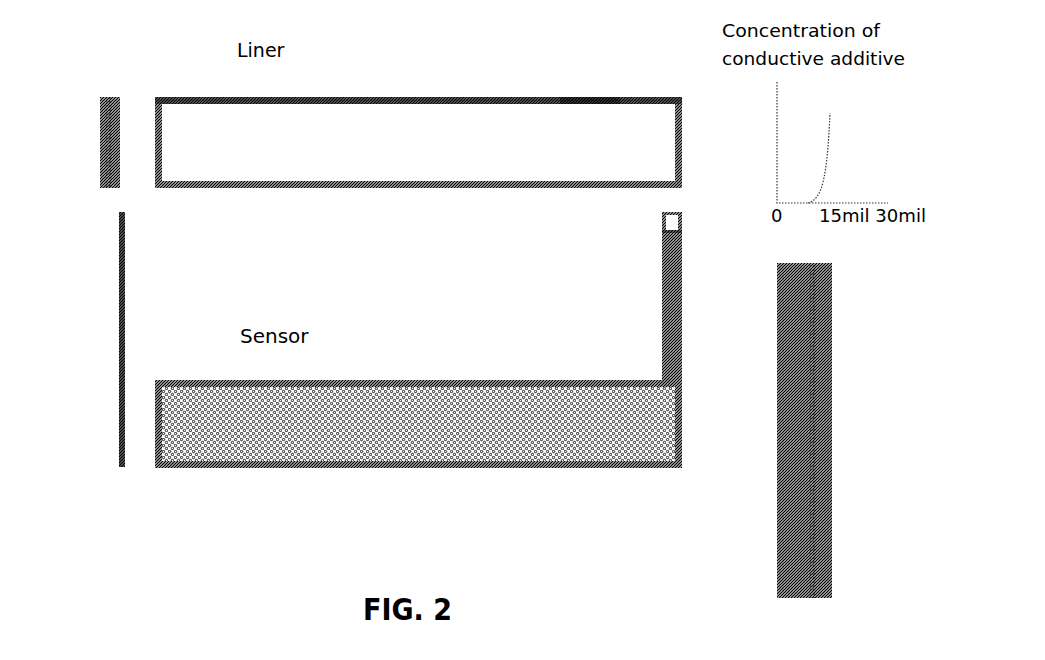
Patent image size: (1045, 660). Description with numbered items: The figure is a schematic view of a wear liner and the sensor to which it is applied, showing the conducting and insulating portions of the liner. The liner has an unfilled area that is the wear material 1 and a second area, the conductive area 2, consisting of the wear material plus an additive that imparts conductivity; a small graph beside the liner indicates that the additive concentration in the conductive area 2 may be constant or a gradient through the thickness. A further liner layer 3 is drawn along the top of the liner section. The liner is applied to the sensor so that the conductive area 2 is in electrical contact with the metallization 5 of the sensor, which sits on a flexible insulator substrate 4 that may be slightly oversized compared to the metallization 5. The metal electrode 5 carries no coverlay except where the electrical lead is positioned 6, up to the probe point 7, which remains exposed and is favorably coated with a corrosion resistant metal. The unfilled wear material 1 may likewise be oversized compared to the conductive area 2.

The wear material 1 is at (100, 132).
The conductive area 2 is at (107, 158).
The liner top layer 3 is at (398, 98).
The flexible insulator substrate 4 is at (118, 367).
The metallization 5 is at (125, 420).
The electrical lead 6 is at (126, 308).
The probe point 7 is at (662, 227).